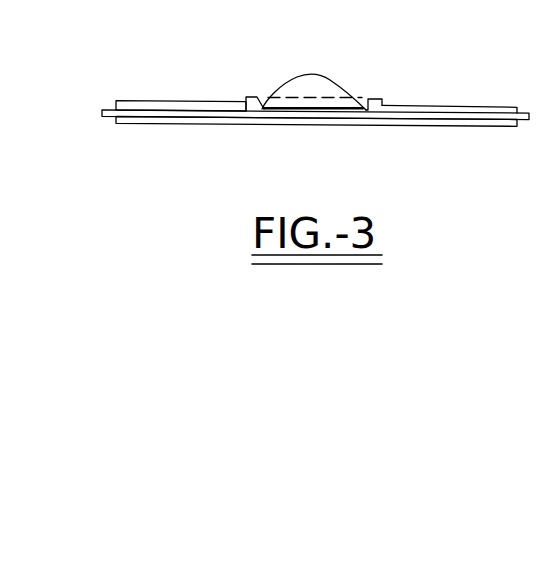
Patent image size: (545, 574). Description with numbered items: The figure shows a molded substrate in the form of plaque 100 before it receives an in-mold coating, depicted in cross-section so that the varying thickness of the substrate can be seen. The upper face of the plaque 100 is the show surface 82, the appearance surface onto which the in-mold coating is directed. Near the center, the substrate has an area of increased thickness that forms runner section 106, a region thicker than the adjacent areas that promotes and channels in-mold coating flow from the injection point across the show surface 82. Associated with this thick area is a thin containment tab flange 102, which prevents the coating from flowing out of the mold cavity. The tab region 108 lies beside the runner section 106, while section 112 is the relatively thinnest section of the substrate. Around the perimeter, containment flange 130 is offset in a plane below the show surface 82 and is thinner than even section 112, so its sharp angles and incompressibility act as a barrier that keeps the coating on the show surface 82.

The plaque 100 is at (183, 130).
The show surface 82 is at (345, 127).
The containment flange 130 is at (104, 113).
The first electrode layer 108 is at (167, 102).
The runner section 106 is at (259, 96).
The containment tab flange 102 is at (336, 82).
The thinnest section 112 is at (480, 106).